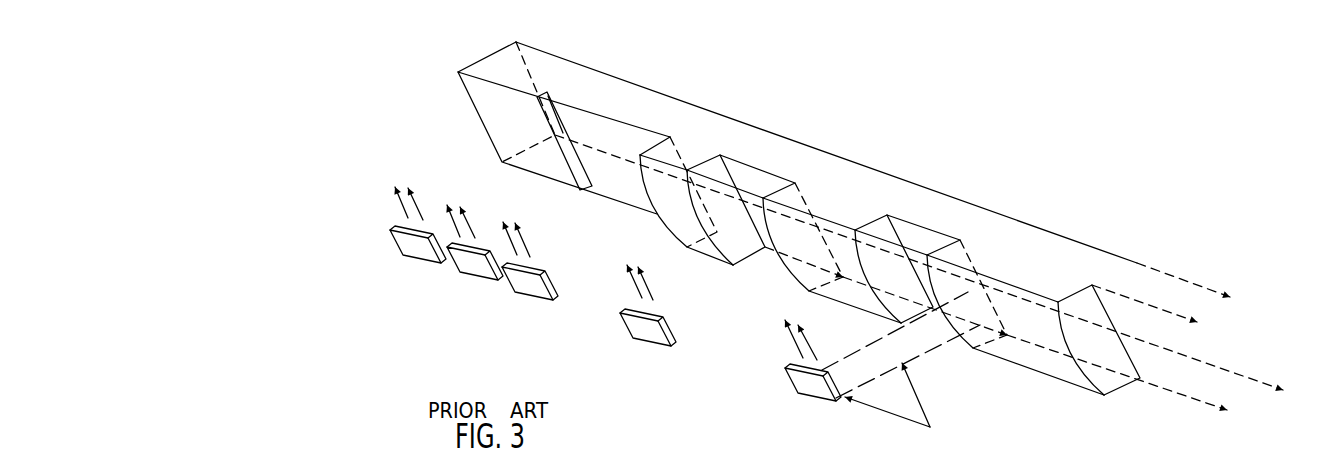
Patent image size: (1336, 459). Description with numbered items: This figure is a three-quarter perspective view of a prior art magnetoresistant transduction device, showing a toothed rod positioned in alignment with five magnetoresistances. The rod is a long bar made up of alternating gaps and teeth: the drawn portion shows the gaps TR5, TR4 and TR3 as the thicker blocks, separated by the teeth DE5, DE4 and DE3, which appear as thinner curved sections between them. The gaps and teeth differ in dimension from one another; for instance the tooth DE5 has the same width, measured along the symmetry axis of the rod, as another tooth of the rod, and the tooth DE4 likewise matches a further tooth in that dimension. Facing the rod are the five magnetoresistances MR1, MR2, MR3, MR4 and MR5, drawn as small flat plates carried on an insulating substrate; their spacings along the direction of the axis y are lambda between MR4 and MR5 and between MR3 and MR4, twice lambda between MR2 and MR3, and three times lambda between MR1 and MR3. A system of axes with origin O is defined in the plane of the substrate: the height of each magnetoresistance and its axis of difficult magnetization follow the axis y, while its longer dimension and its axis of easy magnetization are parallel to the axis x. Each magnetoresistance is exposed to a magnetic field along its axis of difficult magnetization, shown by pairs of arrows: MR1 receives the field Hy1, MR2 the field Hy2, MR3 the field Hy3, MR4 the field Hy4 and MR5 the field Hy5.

The gap TR5 is at (616, 121).
The gap TR4 is at (758, 167).
The gap TR3 is at (923, 226).
The tooth DE5 is at (685, 158).
The tooth DE4 is at (830, 213).
The tooth DE3 is at (1015, 273).
The magnetoresistance MR1 is at (828, 398).
The magnetoresistance MR2 is at (667, 341).
The magnetoresistance MR3 is at (543, 297).
The magnetoresistance MR4 is at (482, 276).
The magnetoresistance MR5 is at (422, 256).
The magnetic field Hy1 is at (814, 334).
The magnetic field Hy2 is at (654, 273).
The magnetic field Hy3 is at (527, 232).
The magnetic field Hy4 is at (474, 213).
The magnetic field Hy5 is at (423, 195).
The axis Ox x is at (887, 412).
The axis Oy y is at (916, 392).
The origin of the axis system O is at (945, 435).